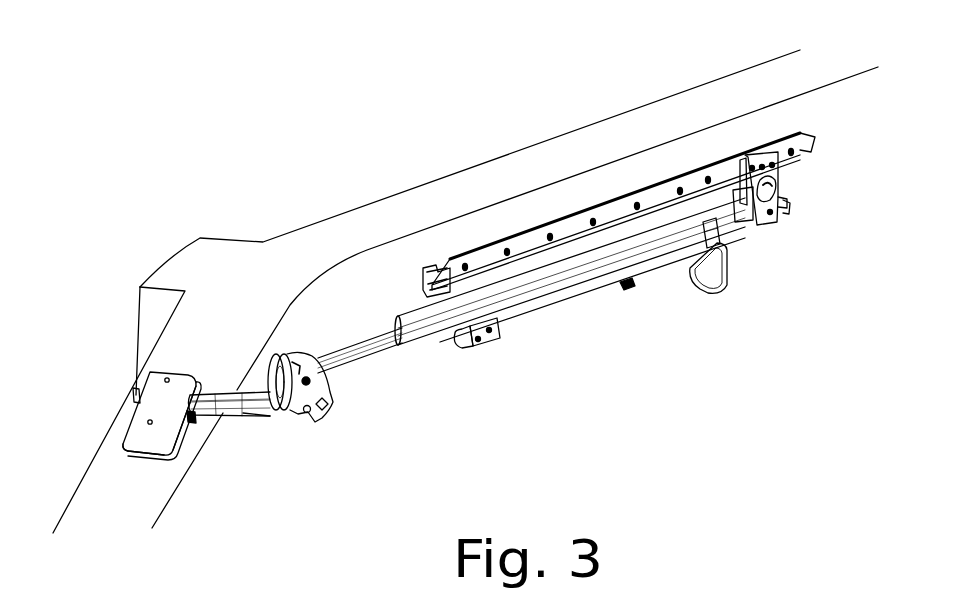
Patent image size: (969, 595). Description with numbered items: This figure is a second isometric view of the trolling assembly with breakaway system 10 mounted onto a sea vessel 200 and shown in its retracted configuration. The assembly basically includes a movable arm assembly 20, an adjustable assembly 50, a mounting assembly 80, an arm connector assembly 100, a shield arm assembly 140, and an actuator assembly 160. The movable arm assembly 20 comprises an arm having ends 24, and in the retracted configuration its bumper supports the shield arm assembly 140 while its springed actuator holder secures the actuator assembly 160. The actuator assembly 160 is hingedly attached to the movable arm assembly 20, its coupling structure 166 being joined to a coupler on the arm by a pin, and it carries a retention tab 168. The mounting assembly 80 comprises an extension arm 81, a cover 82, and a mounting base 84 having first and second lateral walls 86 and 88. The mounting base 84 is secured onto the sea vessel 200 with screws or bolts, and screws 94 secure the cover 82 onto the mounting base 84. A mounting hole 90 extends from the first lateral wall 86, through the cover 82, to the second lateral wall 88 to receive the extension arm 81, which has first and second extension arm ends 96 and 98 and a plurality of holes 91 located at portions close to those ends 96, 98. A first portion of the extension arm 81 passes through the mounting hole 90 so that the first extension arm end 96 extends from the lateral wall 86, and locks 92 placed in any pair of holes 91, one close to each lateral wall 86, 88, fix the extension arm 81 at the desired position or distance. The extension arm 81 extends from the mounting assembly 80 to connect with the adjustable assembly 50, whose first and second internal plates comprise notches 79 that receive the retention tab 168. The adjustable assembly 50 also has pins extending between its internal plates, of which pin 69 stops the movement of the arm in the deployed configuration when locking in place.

The trolling assembly with breakaway system 10 is at (805, 582).
The movable arm assembly 20 is at (413, 368).
The ends 24 is at (283, 417).
The adjustable assembly 50 is at (311, 410).
The second pin 69 is at (283, 413).
The notches 79 is at (272, 392).
The mounting assembly 80 is at (199, 334).
The extension arm 81 is at (243, 413).
The cover 82 is at (155, 400).
The mounting base 84 is at (147, 457).
The first lateral wall 86 is at (122, 440).
The second lateral wall 88 is at (175, 437).
The mounting hole 90 is at (192, 416).
The holes 91 is at (213, 395).
The locks 92 is at (190, 418).
The screws 94 is at (165, 378).
The first extension arm end 96 is at (130, 398).
The second extension arm end 98 is at (333, 403).
The arm connector assembly 100 is at (804, 190).
The shield arm assembly 140 is at (705, 126).
The actuator assembly 160 is at (618, 325).
The coupling structure 166 is at (486, 348).
The retention tab 168 is at (633, 283).
The sea vessel 200 is at (510, 126).